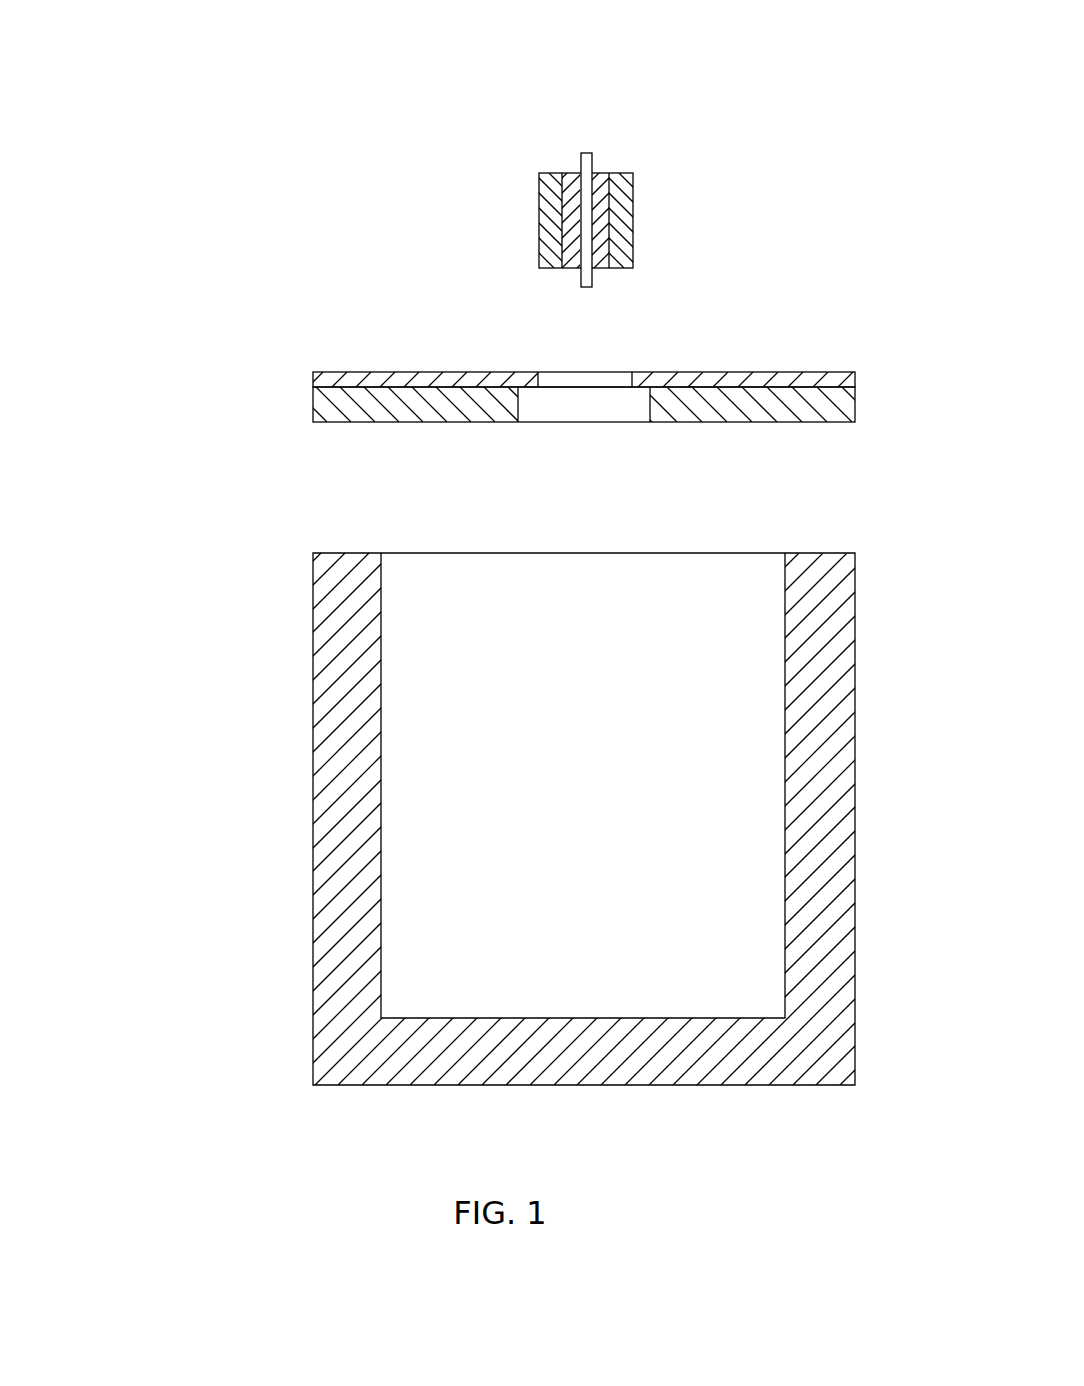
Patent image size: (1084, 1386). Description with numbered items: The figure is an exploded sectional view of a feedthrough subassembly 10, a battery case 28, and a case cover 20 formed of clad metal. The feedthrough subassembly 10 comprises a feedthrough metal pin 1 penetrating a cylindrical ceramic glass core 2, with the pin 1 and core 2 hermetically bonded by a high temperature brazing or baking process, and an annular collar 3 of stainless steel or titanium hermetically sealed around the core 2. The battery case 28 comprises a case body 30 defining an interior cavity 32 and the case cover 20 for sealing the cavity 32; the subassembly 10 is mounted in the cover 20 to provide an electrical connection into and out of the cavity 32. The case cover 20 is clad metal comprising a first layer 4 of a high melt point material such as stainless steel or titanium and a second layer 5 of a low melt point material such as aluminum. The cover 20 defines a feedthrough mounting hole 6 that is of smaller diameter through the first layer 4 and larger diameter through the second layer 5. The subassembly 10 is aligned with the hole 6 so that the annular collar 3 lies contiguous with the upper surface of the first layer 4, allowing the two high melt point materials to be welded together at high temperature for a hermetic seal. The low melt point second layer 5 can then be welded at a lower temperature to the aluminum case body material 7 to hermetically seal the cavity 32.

The feedthrough metal pin 1 is at (587, 153).
The cylindrical ceramic glass core 2 is at (602, 173).
The annular collar 3 is at (620, 173).
The feedthrough subassembly 10 is at (508, 213).
The first layer 4 is at (423, 372).
The second layer 5 is at (855, 412).
The feedthrough mounting hole 6 is at (598, 378).
The case cover 20 is at (283, 388).
The battery case 28 is at (183, 320).
The case body 30 is at (292, 633).
The case body material 7 is at (462, 1084).
The interior cavity 32 is at (565, 953).